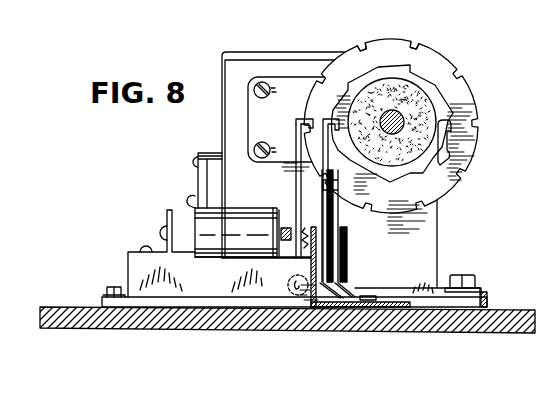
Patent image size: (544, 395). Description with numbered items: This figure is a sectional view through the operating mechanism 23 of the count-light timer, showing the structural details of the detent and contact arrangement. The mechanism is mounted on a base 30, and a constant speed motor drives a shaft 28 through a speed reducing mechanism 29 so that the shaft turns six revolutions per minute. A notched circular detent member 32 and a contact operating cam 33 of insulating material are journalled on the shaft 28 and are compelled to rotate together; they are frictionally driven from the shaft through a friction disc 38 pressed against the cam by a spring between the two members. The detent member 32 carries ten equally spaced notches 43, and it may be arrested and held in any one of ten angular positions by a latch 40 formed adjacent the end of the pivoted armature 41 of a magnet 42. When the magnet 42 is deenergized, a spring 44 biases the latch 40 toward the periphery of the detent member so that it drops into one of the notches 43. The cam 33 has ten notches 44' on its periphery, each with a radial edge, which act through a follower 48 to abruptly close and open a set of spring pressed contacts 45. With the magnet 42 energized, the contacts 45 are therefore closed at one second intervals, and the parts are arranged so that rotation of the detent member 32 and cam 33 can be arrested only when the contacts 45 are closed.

The operating mechanism 23 is at (336, 329).
The shaft 28 is at (404, 118).
The speed reducing mechanism 29 is at (279, 69).
The base 30 is at (81, 306).
The notched circular detent member 32 is at (464, 93).
The contact operating cam 33 is at (419, 82).
The friction disc 38 is at (402, 96).
The latch 40 is at (297, 119).
The pivoted armature 41 is at (296, 183).
The magnet 42 is at (223, 240).
The notches 43 is at (417, 41).
The spring 44 is at (310, 224).
The notches 44' is at (475, 142).
The spring pressed contacts 45 is at (332, 195).
The follower 48 is at (332, 116).